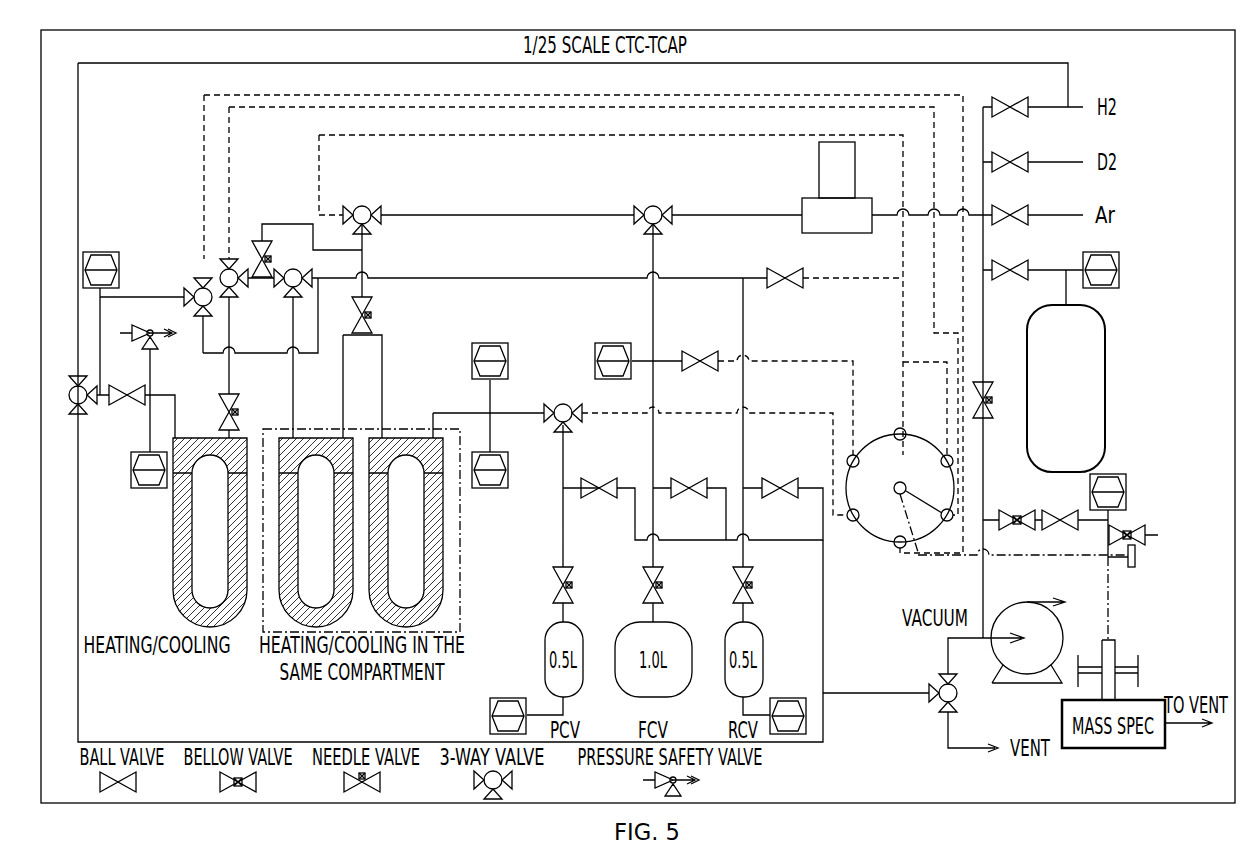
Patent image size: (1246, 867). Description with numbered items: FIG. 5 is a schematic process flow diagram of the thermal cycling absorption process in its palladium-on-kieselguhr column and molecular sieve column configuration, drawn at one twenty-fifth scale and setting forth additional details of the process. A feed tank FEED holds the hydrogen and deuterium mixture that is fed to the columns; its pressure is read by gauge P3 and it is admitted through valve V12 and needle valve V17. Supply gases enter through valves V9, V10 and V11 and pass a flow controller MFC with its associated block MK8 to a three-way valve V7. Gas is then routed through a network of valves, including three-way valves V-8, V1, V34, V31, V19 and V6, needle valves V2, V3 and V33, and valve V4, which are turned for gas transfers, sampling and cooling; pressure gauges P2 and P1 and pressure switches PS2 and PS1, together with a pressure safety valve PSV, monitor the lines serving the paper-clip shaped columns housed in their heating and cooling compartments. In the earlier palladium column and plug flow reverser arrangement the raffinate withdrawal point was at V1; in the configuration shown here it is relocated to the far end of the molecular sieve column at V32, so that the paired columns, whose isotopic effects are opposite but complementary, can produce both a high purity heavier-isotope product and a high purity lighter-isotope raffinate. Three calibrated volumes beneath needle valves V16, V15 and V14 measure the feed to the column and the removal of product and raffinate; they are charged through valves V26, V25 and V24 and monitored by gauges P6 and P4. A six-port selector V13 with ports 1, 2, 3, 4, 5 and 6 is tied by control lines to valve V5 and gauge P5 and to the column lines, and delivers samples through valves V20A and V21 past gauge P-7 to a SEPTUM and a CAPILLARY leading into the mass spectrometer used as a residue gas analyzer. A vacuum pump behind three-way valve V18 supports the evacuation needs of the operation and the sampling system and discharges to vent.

The raffinate withdrawal point V1 is at (293, 268).
The needle valve V2 is at (251, 254).
The needle valve V3 is at (377, 315).
The ball valve V4 is at (785, 265).
The ball valve V5 is at (700, 349).
The three-way valve V6 is at (563, 404).
The three-way valve V7 is at (653, 205).
The three-way valve V-8 is at (362, 206).
The ball valve V9 (H2) V9 is at (1010, 96).
The ball valve V10 (D2) V10 is at (1010, 151).
The ball valve V11 (Ar) V11 is at (1010, 204).
The ball valve V12 is at (1010, 259).
The six-port selector valve V13 is at (898, 498).
The needle valve V14 is at (724, 585).
The needle valve V15 is at (634, 585).
The needle valve V16 is at (543, 585).
The needle valve V17 is at (997, 400).
The three-way valve V18 is at (927, 705).
The three-way valve V19 is at (72, 388).
The bellows valve V20A is at (1017, 507).
The ball valve V21 is at (1060, 507).
The ball valve V24 is at (780, 475).
The ball valve V25 is at (689, 475).
The ball valve V26 is at (599, 475).
The three-way valve V31 is at (185, 285).
The relocated raffinate withdrawal point V32 is at (127, 382).
The needle valve V33 is at (246, 412).
The three-way valve V34 is at (248, 287).
The pressure gauge P1 is at (490, 345).
The pressure gauge P2 is at (101, 260).
The pressure gauge P3 is at (1116, 270).
The pressure gauge P4 is at (788, 702).
The pressure gauge P5 is at (613, 345).
The pressure gauge P6 is at (508, 702).
The pressure gauge P-7 is at (1124, 492).
The pressure switch PS1 is at (490, 486).
The pressure switch PS2 is at (149, 486).
The pressure safety valve PSV is at (148, 326).
The mass flow controller MFC is at (837, 215).
The MK8 controller MK8 is at (837, 170).
The feed tank FEED is at (1066, 388).
The septum SEPTUM is at (1160, 557).
The capillary CAPILLARY is at (1128, 609).
The selector valve port 1 is at (900, 530).
The selector valve port 2 is at (946, 503).
The selector valve port 3 is at (941, 469).
The selector valve port 4 is at (900, 448).
The selector valve port 5 is at (859, 469).
The selector valve port 6 is at (859, 509).